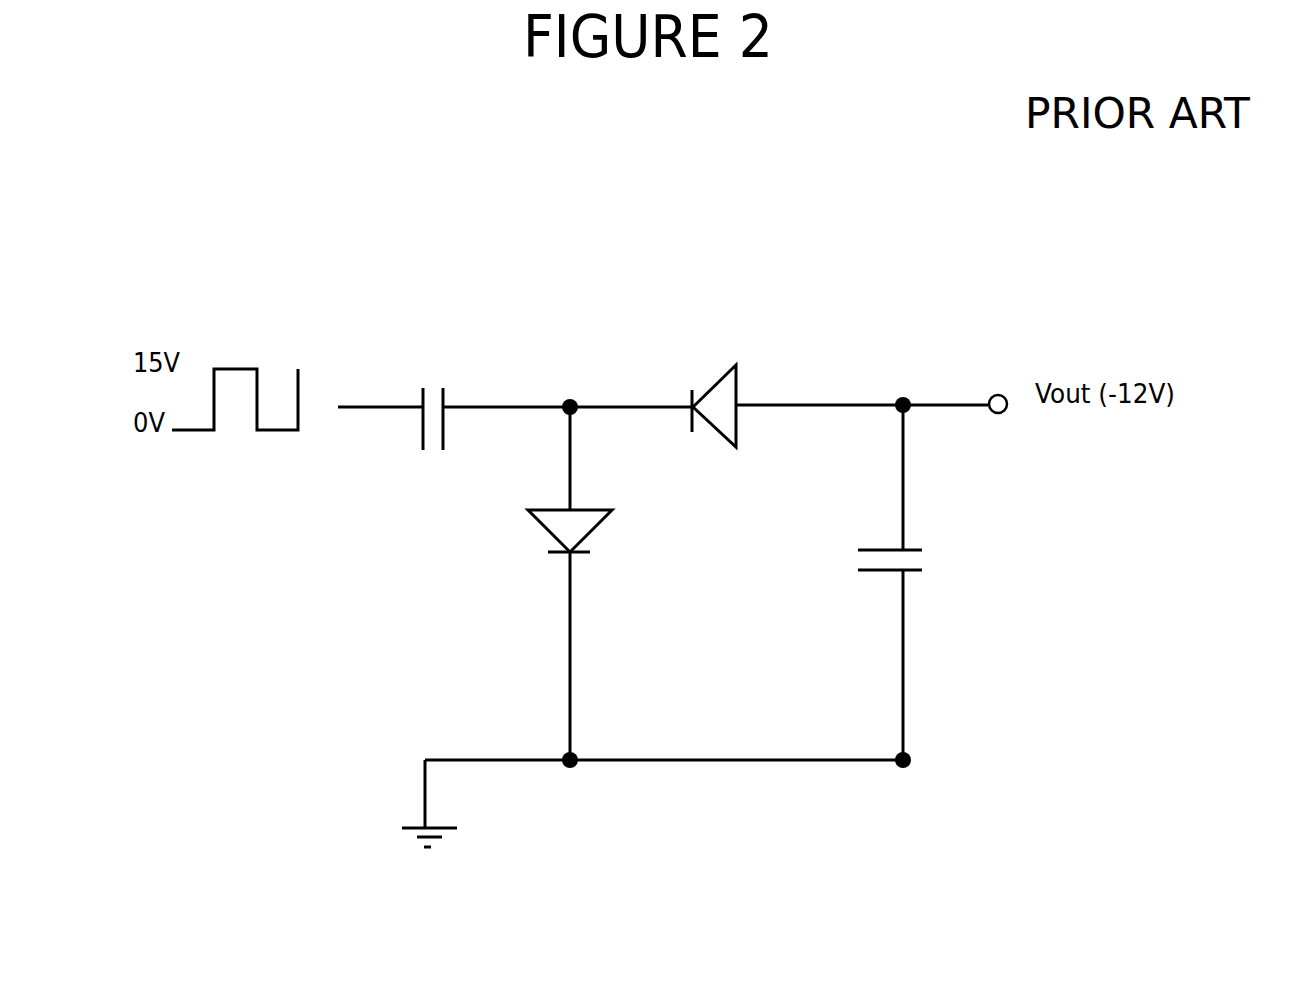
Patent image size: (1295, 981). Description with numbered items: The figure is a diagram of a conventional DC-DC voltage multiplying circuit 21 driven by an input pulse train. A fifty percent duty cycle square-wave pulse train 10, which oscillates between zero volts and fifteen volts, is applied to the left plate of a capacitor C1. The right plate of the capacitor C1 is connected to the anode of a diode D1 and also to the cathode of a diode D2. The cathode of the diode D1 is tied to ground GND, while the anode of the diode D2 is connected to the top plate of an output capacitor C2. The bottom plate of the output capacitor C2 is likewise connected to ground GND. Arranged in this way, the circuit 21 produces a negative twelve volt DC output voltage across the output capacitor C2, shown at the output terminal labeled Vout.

The square-wave pulse train 10 is at (237, 362).
The circuit 21 is at (542, 303).
The capacitor C1 is at (423, 388).
The output capacitor C2 is at (860, 550).
The diode D1 is at (532, 512).
The diode D2 is at (735, 368).
The ground GND is at (403, 822).